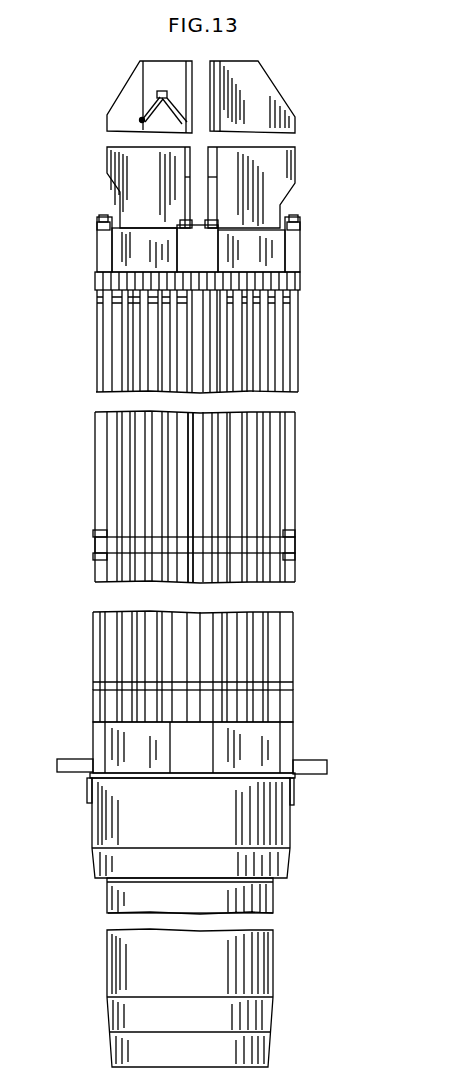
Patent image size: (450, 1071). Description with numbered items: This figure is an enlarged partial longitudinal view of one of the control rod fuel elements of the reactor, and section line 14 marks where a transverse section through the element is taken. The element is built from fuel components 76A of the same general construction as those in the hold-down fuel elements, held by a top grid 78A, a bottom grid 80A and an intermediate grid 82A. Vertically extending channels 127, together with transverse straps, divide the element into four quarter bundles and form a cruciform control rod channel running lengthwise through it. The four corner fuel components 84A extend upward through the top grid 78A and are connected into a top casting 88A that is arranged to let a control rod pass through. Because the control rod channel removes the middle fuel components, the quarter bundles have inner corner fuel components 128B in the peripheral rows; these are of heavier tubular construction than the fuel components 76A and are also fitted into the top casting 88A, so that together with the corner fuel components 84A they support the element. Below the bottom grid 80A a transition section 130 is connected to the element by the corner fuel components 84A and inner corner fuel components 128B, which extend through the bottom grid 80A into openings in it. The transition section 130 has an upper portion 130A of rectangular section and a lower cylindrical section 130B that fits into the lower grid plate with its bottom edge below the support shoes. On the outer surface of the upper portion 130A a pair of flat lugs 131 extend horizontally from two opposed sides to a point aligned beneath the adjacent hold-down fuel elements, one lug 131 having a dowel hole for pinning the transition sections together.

The top casting 88A is at (265, 205).
The top grid 78A is at (300, 282).
The fuel components 76A is at (268, 418).
The corner fuel components 84A is at (95, 565).
The intermediate grid 82A is at (282, 551).
The inner corner fuel components 128B is at (182, 623).
The vertically extending channels 127 is at (192, 572).
The bottom grid 80A is at (288, 707).
The upper portion of transition section 130A is at (288, 748).
The flat lugs 131 is at (318, 770).
The transition section 130 is at (273, 897).
The lower cylindrical section 130B is at (260, 986).
The section line 14- 14 is at (82, 482).